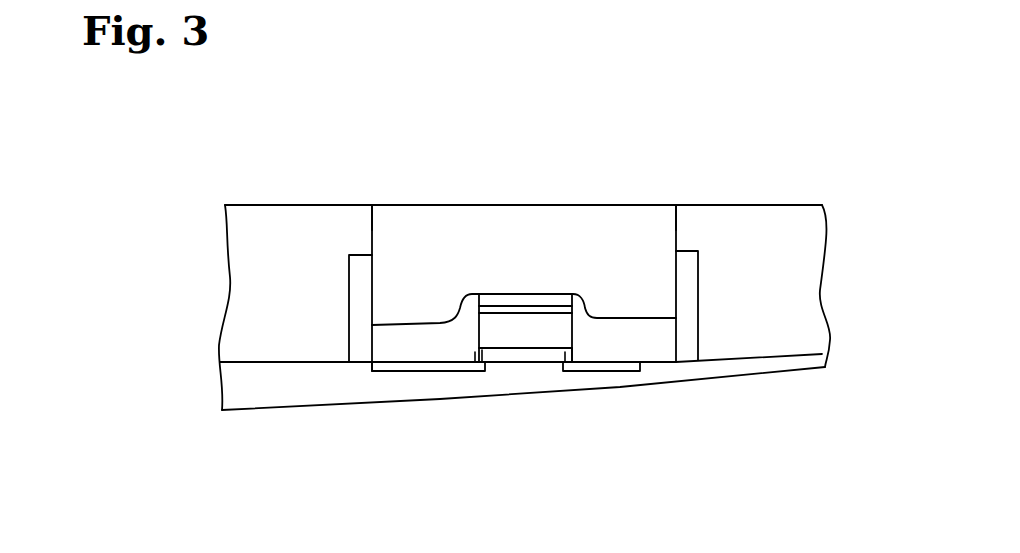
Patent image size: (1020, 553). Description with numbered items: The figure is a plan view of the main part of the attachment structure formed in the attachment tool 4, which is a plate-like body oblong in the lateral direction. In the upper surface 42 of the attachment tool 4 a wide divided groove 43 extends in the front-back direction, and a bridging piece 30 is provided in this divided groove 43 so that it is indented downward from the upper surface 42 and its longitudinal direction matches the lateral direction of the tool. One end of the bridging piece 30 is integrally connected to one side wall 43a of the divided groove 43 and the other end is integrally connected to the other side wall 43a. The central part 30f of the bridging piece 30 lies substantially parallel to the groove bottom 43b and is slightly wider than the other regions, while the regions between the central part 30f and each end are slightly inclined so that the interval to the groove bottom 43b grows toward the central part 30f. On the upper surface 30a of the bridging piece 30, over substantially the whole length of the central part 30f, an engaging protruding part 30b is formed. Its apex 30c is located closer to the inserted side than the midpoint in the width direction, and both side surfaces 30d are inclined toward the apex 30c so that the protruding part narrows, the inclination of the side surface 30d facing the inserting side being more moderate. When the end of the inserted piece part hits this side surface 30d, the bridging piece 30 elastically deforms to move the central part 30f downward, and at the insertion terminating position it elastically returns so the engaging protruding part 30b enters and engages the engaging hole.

The attachment tool 4 is at (257, 312).
The upper surface 42 is at (258, 234).
The divided groove 43 is at (617, 227).
The side wall 43a is at (373, 223).
The groove bottom 43b is at (520, 233).
The bridging piece 30 is at (403, 347).
The upper surface 30a is at (630, 343).
The engaging protruding part 30b is at (547, 335).
The apex 30c is at (522, 310).
The side surface 30d is at (490, 297).
The central part 30f is at (473, 330).